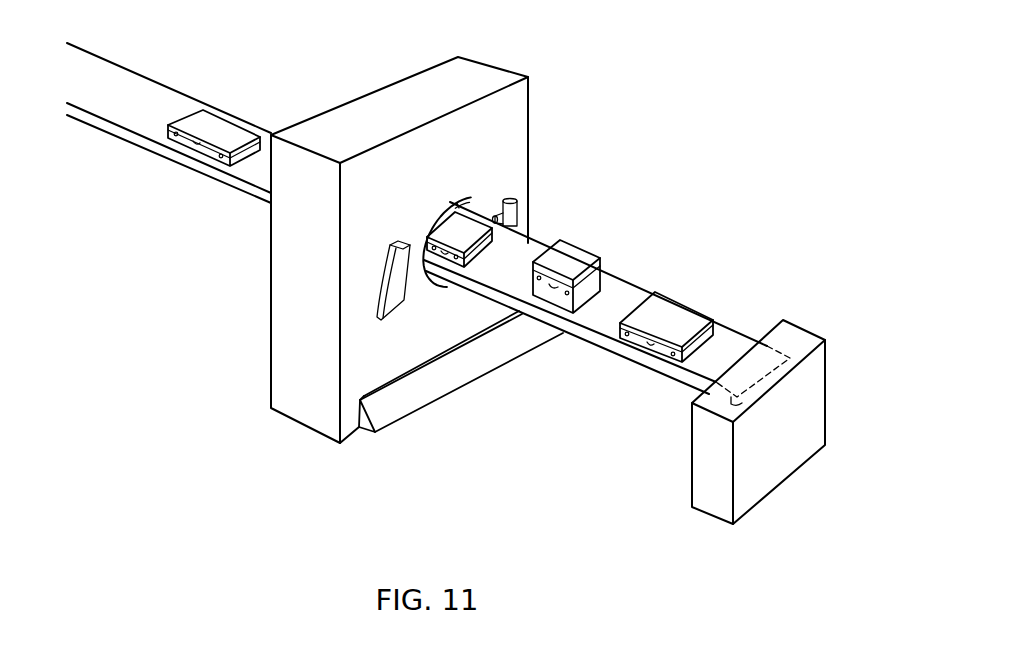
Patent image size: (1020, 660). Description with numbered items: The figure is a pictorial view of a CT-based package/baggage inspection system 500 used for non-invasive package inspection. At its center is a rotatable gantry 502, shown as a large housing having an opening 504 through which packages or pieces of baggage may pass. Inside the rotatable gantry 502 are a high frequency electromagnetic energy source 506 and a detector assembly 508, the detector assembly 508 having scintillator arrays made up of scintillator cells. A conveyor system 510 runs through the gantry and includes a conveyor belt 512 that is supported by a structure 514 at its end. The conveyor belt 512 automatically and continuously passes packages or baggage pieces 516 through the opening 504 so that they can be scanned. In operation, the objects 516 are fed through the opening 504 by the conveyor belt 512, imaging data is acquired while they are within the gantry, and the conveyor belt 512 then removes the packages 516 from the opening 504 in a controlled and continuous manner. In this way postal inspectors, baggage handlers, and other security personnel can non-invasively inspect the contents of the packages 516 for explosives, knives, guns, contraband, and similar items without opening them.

The package/baggage inspection system 500 is at (707, 153).
The rotatable gantry 502 is at (521, 162).
The opening 504 is at (473, 195).
The high frequency electromagnetic energy source 506 is at (518, 214).
The detector assembly 508 is at (405, 308).
The conveyor system 510 is at (119, 152).
The conveyor belt 512 is at (240, 182).
The structure 514 is at (812, 398).
The packages or baggage pieces 516 is at (220, 128).